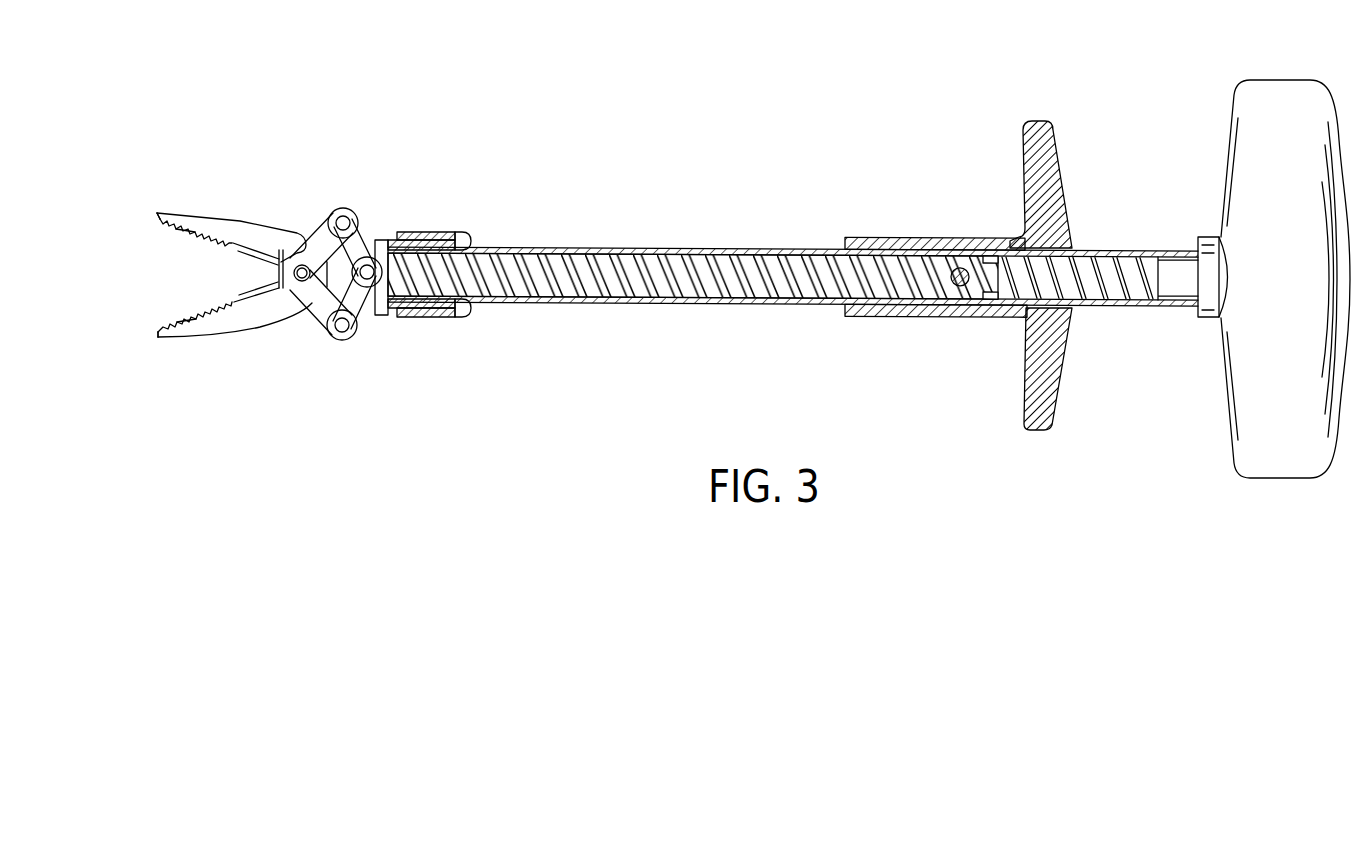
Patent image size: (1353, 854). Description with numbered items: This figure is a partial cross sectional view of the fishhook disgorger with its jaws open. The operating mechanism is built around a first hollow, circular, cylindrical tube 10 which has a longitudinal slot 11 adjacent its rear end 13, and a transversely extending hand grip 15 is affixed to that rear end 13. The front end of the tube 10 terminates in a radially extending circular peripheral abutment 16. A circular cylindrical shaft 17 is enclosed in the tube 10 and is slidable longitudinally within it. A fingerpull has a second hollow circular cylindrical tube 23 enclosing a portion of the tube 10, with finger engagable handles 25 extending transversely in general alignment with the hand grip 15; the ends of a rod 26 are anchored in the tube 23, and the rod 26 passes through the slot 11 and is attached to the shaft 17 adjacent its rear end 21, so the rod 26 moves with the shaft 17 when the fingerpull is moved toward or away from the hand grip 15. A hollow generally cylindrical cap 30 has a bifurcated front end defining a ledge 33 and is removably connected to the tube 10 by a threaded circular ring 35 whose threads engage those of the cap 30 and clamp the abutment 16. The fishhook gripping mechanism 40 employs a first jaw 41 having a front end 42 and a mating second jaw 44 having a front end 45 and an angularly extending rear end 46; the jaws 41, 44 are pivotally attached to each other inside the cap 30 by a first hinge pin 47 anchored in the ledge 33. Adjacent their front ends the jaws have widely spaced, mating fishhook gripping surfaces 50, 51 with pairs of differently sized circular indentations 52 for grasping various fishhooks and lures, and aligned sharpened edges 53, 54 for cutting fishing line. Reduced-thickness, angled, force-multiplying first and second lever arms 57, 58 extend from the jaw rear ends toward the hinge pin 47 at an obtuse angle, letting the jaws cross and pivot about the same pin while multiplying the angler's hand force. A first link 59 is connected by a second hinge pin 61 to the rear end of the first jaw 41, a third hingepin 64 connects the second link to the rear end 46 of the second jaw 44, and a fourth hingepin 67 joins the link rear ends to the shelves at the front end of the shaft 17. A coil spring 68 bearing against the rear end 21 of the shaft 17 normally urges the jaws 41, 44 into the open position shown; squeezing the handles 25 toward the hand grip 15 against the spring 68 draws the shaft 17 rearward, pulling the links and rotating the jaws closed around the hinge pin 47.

The first hollow, circular, cylindrical tube 10 is at (712, 302).
The longitudinal slot 11 is at (1026, 298).
The rear end 13 is at (1172, 250).
The hand grip 15 is at (1222, 385).
The circular peripheral abutment 16 is at (469, 310).
The circular, cylindrical shaft 17 is at (752, 247).
The rear end 21 is at (996, 313).
The second hollow circular cylindrical tube 23 is at (887, 235).
The finger engagable handles 25 is at (1040, 120).
The rod 26 is at (962, 265).
The cap 30 is at (447, 318).
The ledge 33 is at (390, 240).
The threaded circular ring 35 is at (471, 234).
The fishhook gripping mechanism 40 is at (249, 268).
The first jaw 41 is at (220, 221).
The front end 42 is at (161, 208).
The second jaw 44 is at (267, 327).
The front end 45 is at (158, 337).
The rear end 46 is at (333, 212).
The first hinge pin 47 is at (302, 264).
The fishhook gripping surface 50 is at (187, 232).
The fishhook gripping surface 51 is at (158, 325).
The circular indentations 52 is at (229, 268).
The sharpened edge 53 is at (243, 292).
The sharpened edge 54 is at (247, 265).
The first lever arm 57 is at (307, 304).
The second lever arm 58 is at (320, 232).
The first link 59 is at (347, 306).
The second hinge pin 61 is at (337, 340).
The third hingepin 64 is at (368, 245).
The fourth hingepin 67 is at (381, 310).
The coil spring 68 is at (1092, 246).